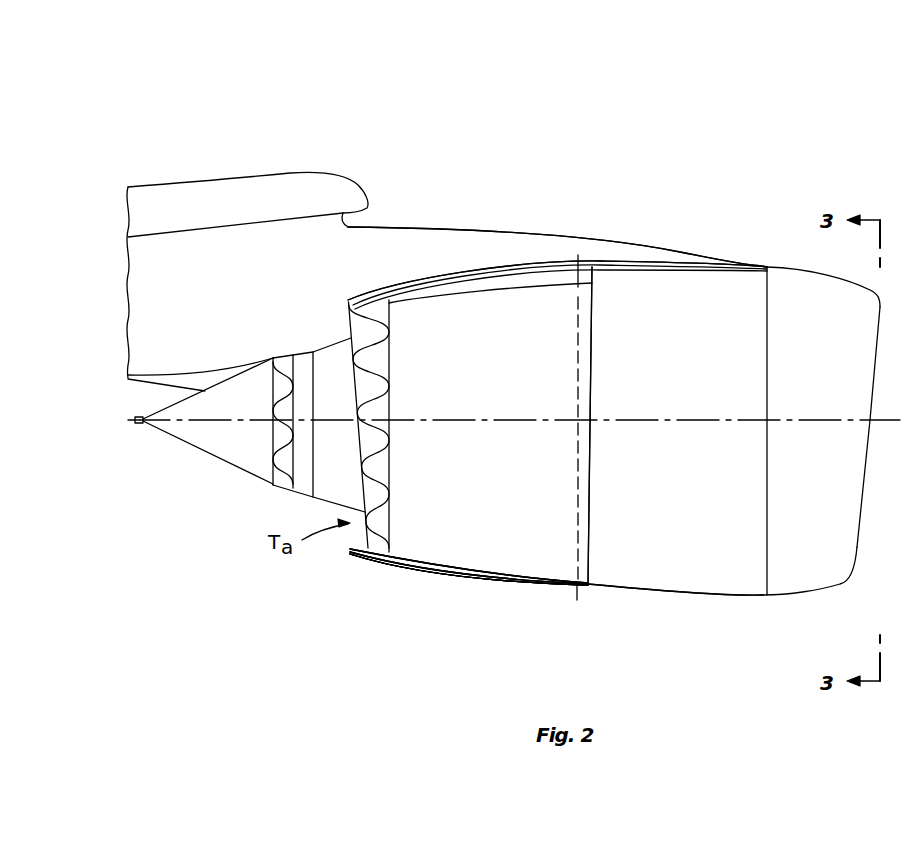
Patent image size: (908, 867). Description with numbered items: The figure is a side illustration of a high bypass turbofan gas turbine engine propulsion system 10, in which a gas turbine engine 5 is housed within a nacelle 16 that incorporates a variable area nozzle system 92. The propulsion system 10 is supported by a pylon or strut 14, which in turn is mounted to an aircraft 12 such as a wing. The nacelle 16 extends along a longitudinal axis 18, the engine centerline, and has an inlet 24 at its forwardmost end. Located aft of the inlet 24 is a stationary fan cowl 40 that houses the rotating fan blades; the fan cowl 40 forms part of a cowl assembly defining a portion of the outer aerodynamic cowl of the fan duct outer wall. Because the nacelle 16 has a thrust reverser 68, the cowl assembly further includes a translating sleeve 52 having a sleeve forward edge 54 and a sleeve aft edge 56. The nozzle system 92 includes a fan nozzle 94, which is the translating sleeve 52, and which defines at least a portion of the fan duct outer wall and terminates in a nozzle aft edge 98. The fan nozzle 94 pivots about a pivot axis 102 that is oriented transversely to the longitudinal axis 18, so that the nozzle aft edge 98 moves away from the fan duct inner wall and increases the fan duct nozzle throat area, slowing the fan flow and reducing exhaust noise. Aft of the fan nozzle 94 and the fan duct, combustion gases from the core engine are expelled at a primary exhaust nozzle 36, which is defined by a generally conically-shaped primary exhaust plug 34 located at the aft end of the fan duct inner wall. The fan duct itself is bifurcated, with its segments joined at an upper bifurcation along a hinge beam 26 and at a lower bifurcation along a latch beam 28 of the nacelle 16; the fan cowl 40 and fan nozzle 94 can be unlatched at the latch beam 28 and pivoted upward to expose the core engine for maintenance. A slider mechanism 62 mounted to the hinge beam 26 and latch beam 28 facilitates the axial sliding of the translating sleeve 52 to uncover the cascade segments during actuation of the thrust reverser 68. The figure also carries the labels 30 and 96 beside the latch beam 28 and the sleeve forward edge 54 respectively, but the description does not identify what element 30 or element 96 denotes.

The gas turbine engine 5 is at (729, 159).
The gas turbine engine propulsion system 10 is at (729, 159).
The aircraft 12 is at (228, 175).
The pylon or strut 14 is at (233, 290).
The nacelle 16 is at (782, 270).
The longitudinal axis 18 is at (888, 420).
The inlet 24 is at (857, 547).
The hinge beam 26 is at (605, 250).
The latch beam 28 is at (485, 585).
The cowl 30 is at (605, 250).
The primary exhaust plug 34 is at (155, 427).
The primary exhaust nozzle 36 is at (277, 487).
The stationary fan cowl 40 is at (723, 597).
The translating sleeve 52 is at (545, 588).
The sleeve forward edge 54 is at (595, 523).
The sleeve aft edge 56 is at (375, 557).
The slider mechanism 62 is at (449, 283).
The thrust reverser 68 is at (545, 588).
The variable area nozzle system 92 is at (508, 627).
The fan nozzle 94 is at (545, 588).
The door 96 is at (595, 523).
The nozzle aft edge 98 is at (375, 557).
The pivot axis 102 is at (578, 597).